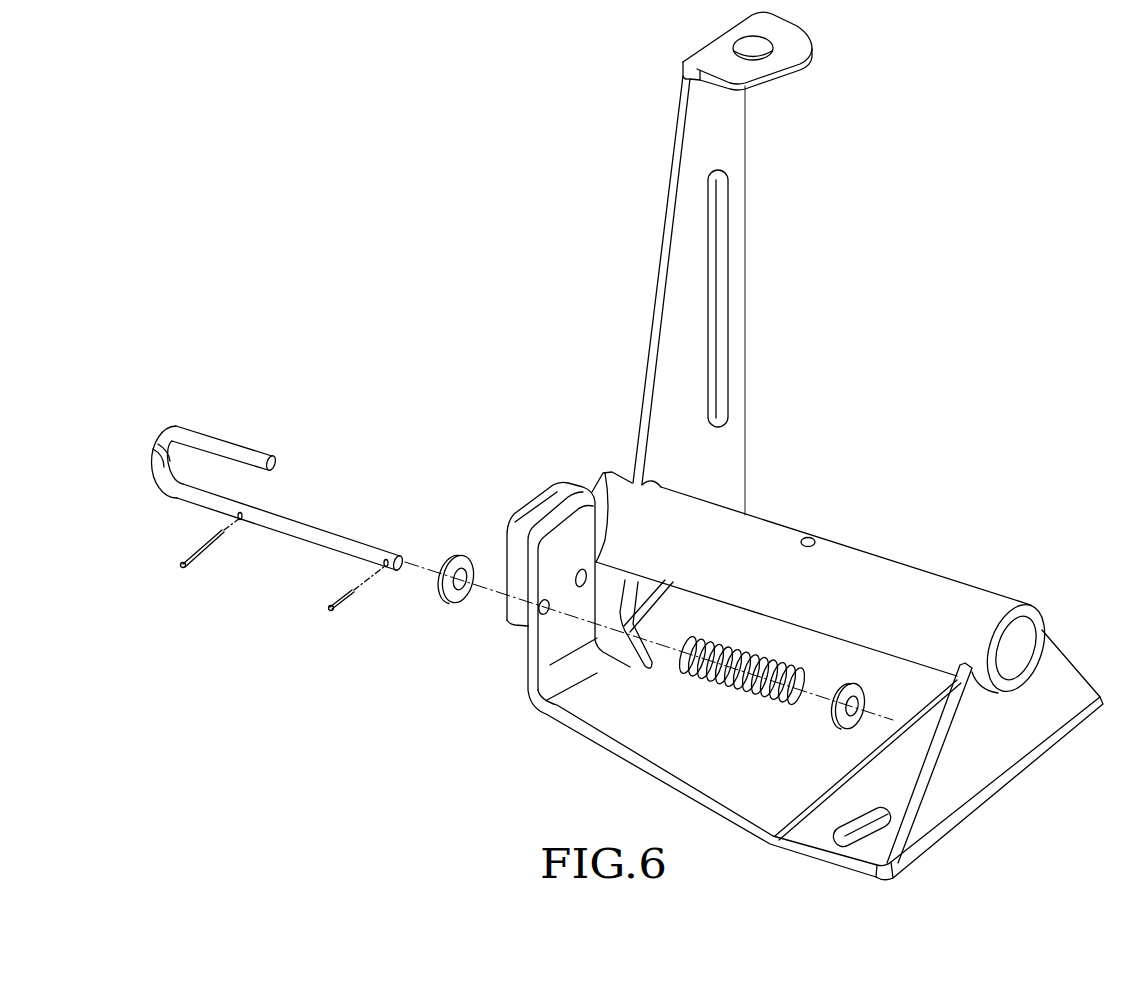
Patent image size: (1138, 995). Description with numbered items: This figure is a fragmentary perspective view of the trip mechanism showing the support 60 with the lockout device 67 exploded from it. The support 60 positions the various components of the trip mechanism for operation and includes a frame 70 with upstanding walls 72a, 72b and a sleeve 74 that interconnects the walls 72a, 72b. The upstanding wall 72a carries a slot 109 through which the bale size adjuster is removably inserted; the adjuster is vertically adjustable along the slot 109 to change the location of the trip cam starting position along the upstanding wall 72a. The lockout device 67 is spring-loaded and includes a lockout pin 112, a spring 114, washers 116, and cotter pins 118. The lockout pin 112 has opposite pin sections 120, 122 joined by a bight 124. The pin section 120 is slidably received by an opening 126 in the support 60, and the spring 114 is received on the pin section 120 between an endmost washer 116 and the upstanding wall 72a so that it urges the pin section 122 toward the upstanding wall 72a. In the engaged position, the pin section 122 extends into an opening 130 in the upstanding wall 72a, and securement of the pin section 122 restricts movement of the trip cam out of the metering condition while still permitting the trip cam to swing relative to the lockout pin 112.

The lockout device 67 is at (162, 241).
The support 60 is at (600, 744).
The frame 70 is at (747, 790).
The upstanding wall 72a is at (730, 433).
The upstanding wall 72b is at (1048, 677).
The sleeve 74 is at (917, 587).
The slot 109 is at (727, 298).
The lockout pin 112 is at (190, 497).
The spring 114 is at (730, 683).
The washers 116 is at (445, 598).
The cotter pins 118 is at (196, 570).
The pin section 120 is at (305, 525).
The pin section 122 is at (217, 438).
The bight 124 is at (152, 455).
The opening 126 is at (541, 624).
The opening 130 is at (604, 474).